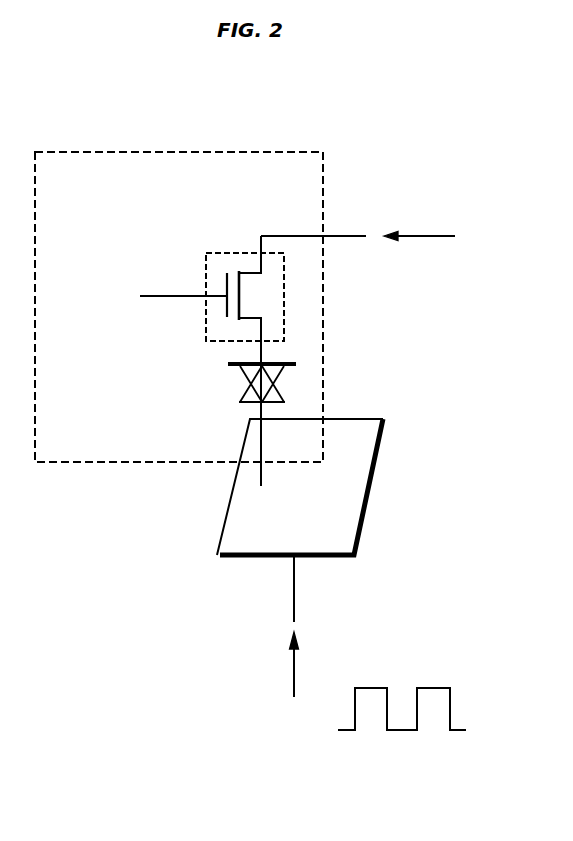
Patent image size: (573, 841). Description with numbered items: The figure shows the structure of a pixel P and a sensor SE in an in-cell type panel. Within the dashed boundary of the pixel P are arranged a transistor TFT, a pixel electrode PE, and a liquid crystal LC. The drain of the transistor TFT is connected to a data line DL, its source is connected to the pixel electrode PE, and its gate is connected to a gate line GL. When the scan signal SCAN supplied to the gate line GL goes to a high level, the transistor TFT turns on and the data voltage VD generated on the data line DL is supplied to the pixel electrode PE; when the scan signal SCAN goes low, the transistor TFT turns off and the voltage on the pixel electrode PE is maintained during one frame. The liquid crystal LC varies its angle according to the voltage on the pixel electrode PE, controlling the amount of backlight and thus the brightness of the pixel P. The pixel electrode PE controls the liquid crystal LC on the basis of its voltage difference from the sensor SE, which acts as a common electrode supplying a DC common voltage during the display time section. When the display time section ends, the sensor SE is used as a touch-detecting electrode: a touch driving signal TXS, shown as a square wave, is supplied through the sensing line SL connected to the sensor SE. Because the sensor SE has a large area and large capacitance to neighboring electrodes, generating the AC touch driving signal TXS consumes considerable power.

The pixel P is at (82, 187).
The transistor TFT is at (212, 251).
The data line DL is at (283, 235).
The data voltage VD is at (443, 237).
The gate line GL is at (173, 297).
The scan signal SCAN is at (95, 298).
The pixel electrode PE is at (296, 364).
The liquid crystal LC is at (240, 402).
The sensor SE is at (300, 487).
The sensing line SL is at (294, 580).
The touch driving signal TXS is at (370, 681).